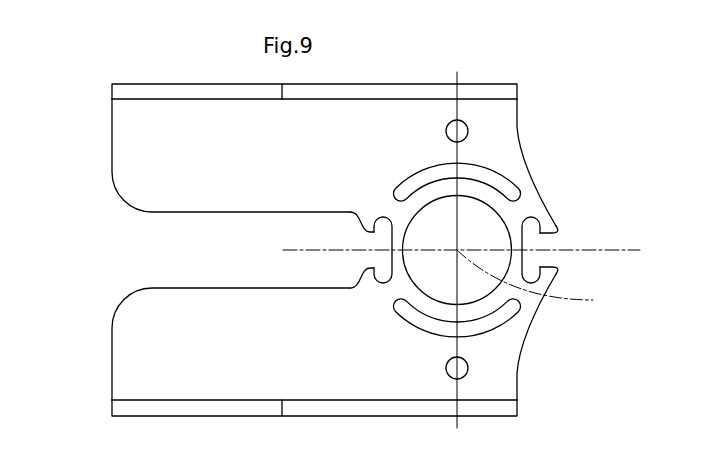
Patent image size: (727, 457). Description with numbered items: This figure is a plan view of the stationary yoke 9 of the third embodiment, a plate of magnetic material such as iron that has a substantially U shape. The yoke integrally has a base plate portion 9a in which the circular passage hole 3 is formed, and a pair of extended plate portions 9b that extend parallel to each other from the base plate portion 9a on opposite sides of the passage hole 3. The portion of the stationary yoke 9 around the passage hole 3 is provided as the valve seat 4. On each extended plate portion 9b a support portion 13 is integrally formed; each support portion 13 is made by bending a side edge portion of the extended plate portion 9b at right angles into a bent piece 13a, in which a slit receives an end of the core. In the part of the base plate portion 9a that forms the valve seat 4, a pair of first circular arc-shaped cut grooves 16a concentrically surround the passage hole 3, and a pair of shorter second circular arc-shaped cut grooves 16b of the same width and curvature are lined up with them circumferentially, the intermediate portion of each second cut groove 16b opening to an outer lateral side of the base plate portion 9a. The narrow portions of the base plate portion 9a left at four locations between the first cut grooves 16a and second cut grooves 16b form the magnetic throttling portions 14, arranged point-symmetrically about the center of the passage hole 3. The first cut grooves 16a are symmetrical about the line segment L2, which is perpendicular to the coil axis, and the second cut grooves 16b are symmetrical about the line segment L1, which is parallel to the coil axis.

The support portion 13 is at (122, 82).
The bent piece 13a is at (207, 96).
The extended plate portion 9b is at (118, 163).
The second circular arc-shaped cut groove 16b is at (376, 241).
The magnetic throttling portion 14 is at (383, 204).
The stationary yoke 9 is at (525, 112).
The base plate portion 9a is at (500, 387).
The first circular arc-shaped cut groove 16a is at (434, 168).
The passage hole 3 is at (478, 222).
The valve seat 4 is at (486, 312).
The line segment L1 is at (459, 112).
The line segment L2 is at (613, 249).